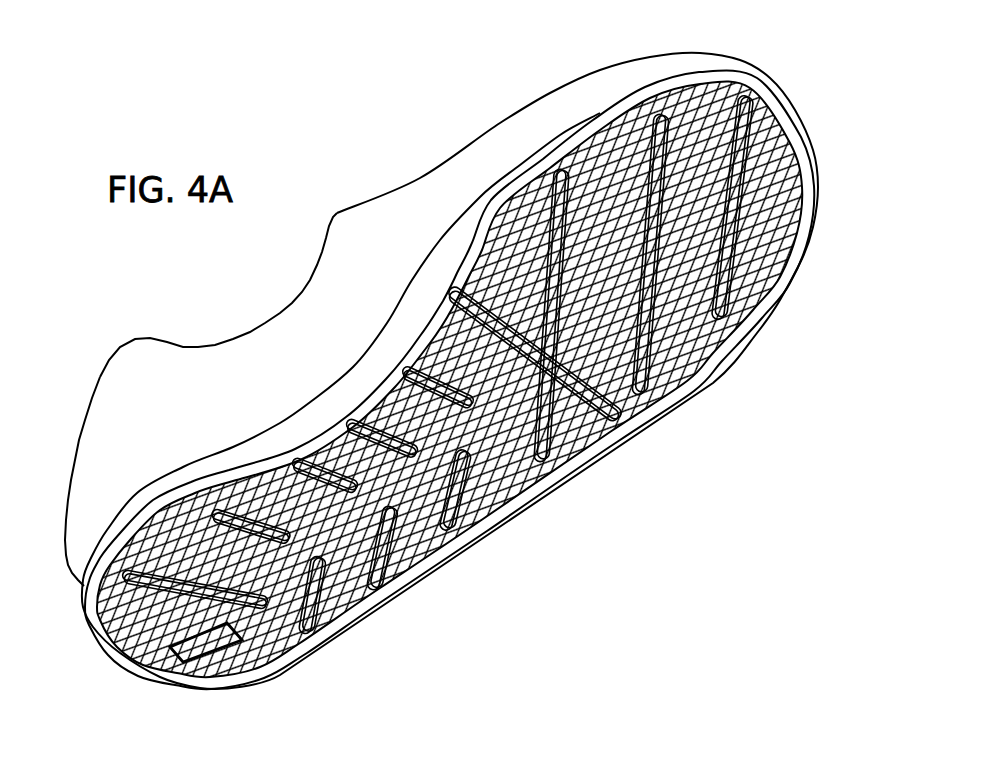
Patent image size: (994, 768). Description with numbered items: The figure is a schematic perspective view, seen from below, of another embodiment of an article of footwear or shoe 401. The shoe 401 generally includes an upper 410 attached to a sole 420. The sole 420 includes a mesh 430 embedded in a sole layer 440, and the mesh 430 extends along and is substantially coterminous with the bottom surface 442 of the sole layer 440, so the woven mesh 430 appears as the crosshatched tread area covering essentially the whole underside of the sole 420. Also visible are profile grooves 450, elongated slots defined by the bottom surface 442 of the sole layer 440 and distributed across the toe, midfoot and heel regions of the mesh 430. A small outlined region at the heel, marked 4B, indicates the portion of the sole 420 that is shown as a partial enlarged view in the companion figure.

The shoe 401 is at (570, 34).
The upper 410 is at (355, 203).
The sole 420 is at (66, 578).
The mesh 430 is at (520, 488).
The sole layer 440 is at (480, 197).
The bottom surface 442 is at (767, 313).
The profile grooves 450 is at (745, 97).
The section line for FIG. 4B is at (184, 666).